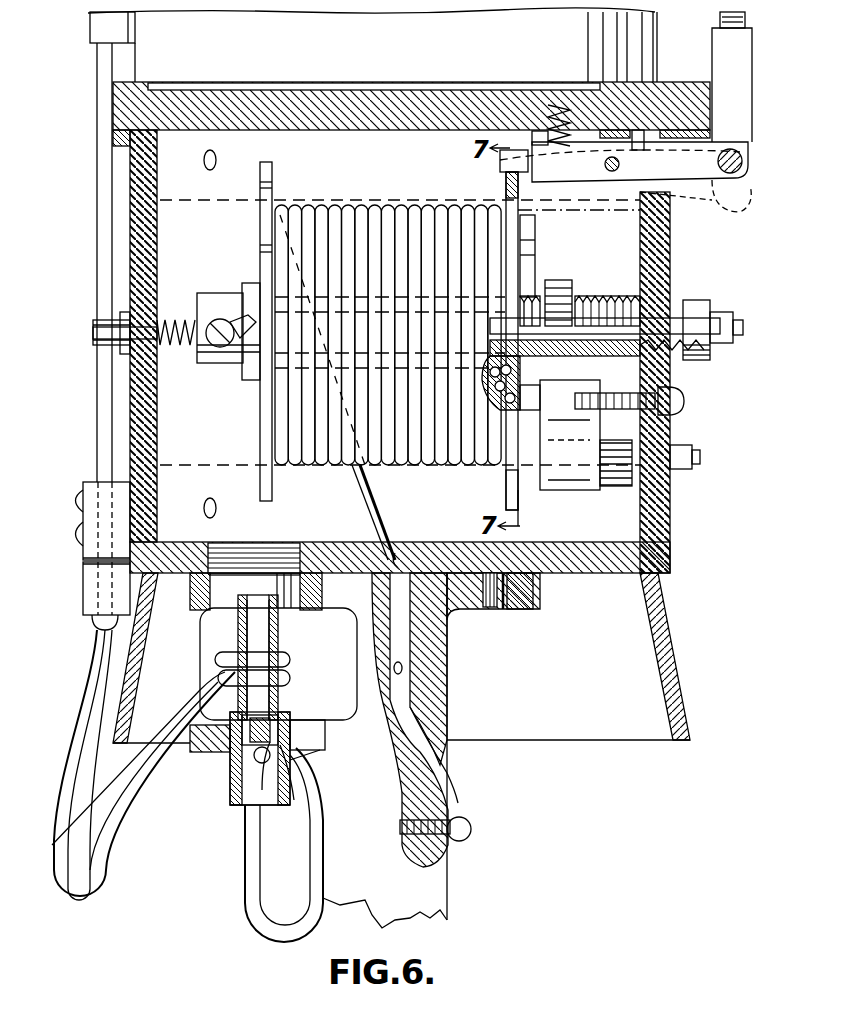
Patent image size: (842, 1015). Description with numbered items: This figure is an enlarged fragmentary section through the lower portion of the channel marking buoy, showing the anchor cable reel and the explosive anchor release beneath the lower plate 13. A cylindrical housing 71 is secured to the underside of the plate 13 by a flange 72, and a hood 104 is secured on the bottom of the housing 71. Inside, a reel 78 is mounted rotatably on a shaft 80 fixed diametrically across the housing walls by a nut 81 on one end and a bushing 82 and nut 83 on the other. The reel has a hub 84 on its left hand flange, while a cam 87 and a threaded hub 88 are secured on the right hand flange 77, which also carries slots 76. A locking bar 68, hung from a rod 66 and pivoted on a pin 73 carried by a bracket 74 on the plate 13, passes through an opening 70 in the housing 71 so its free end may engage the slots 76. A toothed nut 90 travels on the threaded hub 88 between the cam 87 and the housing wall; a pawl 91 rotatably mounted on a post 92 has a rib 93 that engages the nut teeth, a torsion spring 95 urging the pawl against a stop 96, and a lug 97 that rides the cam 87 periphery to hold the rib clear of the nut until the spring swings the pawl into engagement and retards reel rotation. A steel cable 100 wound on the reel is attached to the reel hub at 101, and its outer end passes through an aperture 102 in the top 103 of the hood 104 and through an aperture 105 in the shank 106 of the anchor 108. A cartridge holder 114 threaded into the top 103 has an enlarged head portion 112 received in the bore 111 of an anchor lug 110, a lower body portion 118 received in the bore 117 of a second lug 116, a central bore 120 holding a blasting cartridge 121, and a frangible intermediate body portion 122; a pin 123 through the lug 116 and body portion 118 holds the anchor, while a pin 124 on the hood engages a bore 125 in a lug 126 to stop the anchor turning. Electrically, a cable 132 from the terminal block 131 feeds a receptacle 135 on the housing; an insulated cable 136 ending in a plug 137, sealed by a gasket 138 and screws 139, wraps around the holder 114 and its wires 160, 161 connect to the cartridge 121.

The lower plate 13 is at (683, 82).
The rod 66 is at (738, 72).
The locking bar 68 is at (705, 176).
The opening 70 is at (638, 192).
The cylindrical housing 71 is at (668, 278).
The flange 72 is at (97, 140).
The pin 73 is at (620, 164).
The bracket 74 is at (590, 140).
The slots 76 is at (503, 482).
The flange 77 is at (503, 173).
The reel 78 is at (252, 218).
The shaft 80 is at (100, 338).
The nut 81 is at (108, 316).
The bushing 82 is at (700, 305).
The nut 83 is at (722, 343).
The hub 84 is at (218, 300).
The cam 87 is at (532, 292).
The threaded hub 88 is at (612, 292).
The toothed nut 90 is at (566, 282).
The pawl 91 is at (567, 488).
The post 92 is at (693, 458).
The rib 93 is at (592, 392).
The torsion spring 95 is at (625, 490).
The stop 96 is at (690, 405).
The lug 97 is at (528, 392).
The steel cable 100 is at (365, 490).
The cable attachment point 101 is at (216, 340).
The aperture 102 is at (400, 560).
The top of hood 103 is at (580, 574).
The hood 104 is at (684, 622).
The aperture 105 is at (404, 668).
The shank 106 is at (448, 712).
The anchor 108 is at (459, 890).
The lug 110 is at (200, 600).
The bore 111 is at (214, 606).
The enlarged head portion 112 is at (290, 605).
The cartridge holder 114 is at (219, 788).
The second lug 116 is at (210, 705).
The bore 117 is at (288, 742).
The lower body portion 118 is at (234, 792).
The central bore 120 is at (292, 782).
The blasting cartridge 121 is at (262, 640).
The intermediate body portion 122 is at (273, 674).
The pin 123 is at (246, 748).
The pin 124 is at (490, 608).
The bore 125 is at (504, 608).
The lug 126 is at (534, 602).
The terminal block 131 is at (93, 30).
The electric cable 132 is at (97, 214).
The receptacle 135 is at (82, 479).
The insulated electric cable 136 is at (96, 700).
The plug 137 is at (90, 585).
The gasket 138 is at (82, 566).
The screws 139 is at (90, 630).
The insulated wire 160 is at (318, 756).
The insulated wire 161 is at (247, 812).